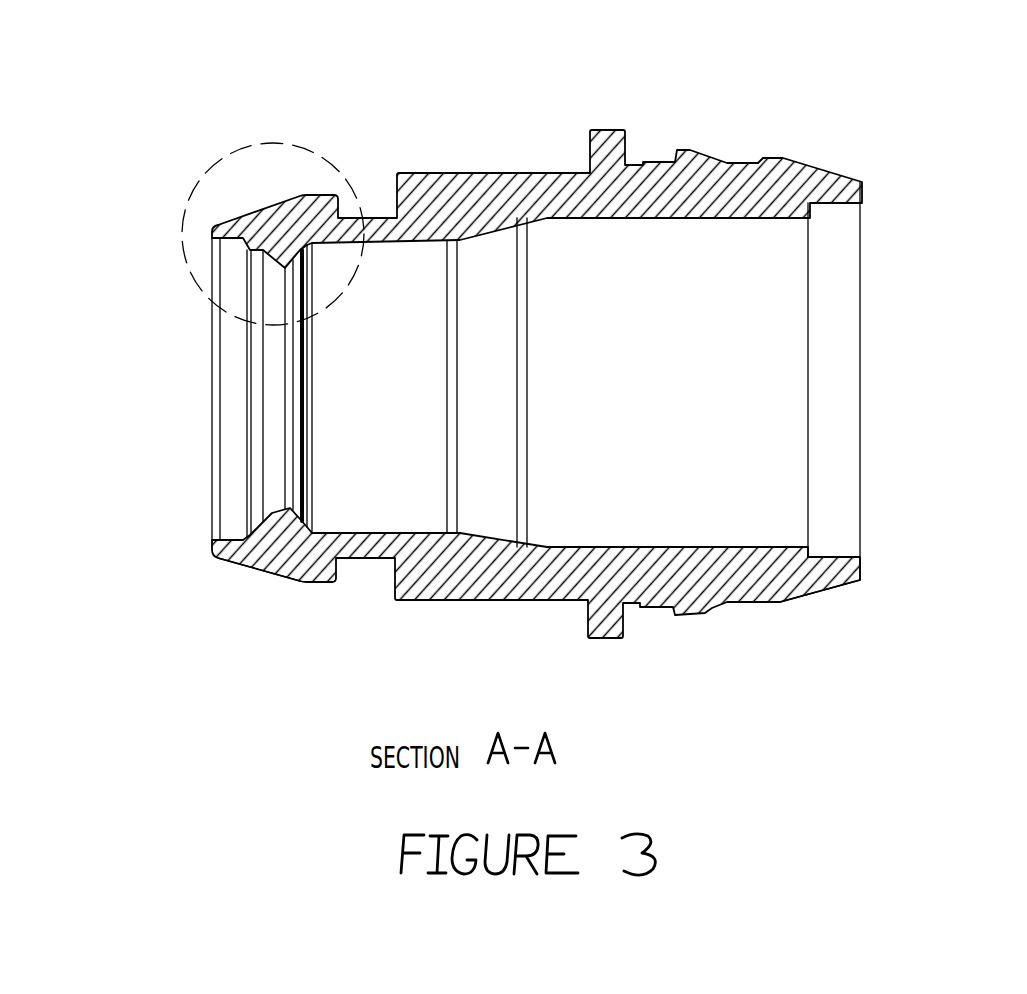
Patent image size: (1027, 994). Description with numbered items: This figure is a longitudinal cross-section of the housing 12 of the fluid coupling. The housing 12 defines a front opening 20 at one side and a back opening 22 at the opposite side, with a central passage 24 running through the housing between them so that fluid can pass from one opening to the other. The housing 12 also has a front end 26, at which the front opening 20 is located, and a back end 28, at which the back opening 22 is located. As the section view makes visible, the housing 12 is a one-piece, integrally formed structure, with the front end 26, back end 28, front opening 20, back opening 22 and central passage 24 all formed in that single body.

The housing 12 is at (553, 136).
The front opening 20 is at (195, 438).
The back opening 22 is at (880, 428).
The central passage 24 is at (551, 382).
The front end 26 is at (252, 585).
The back end 28 is at (845, 598).